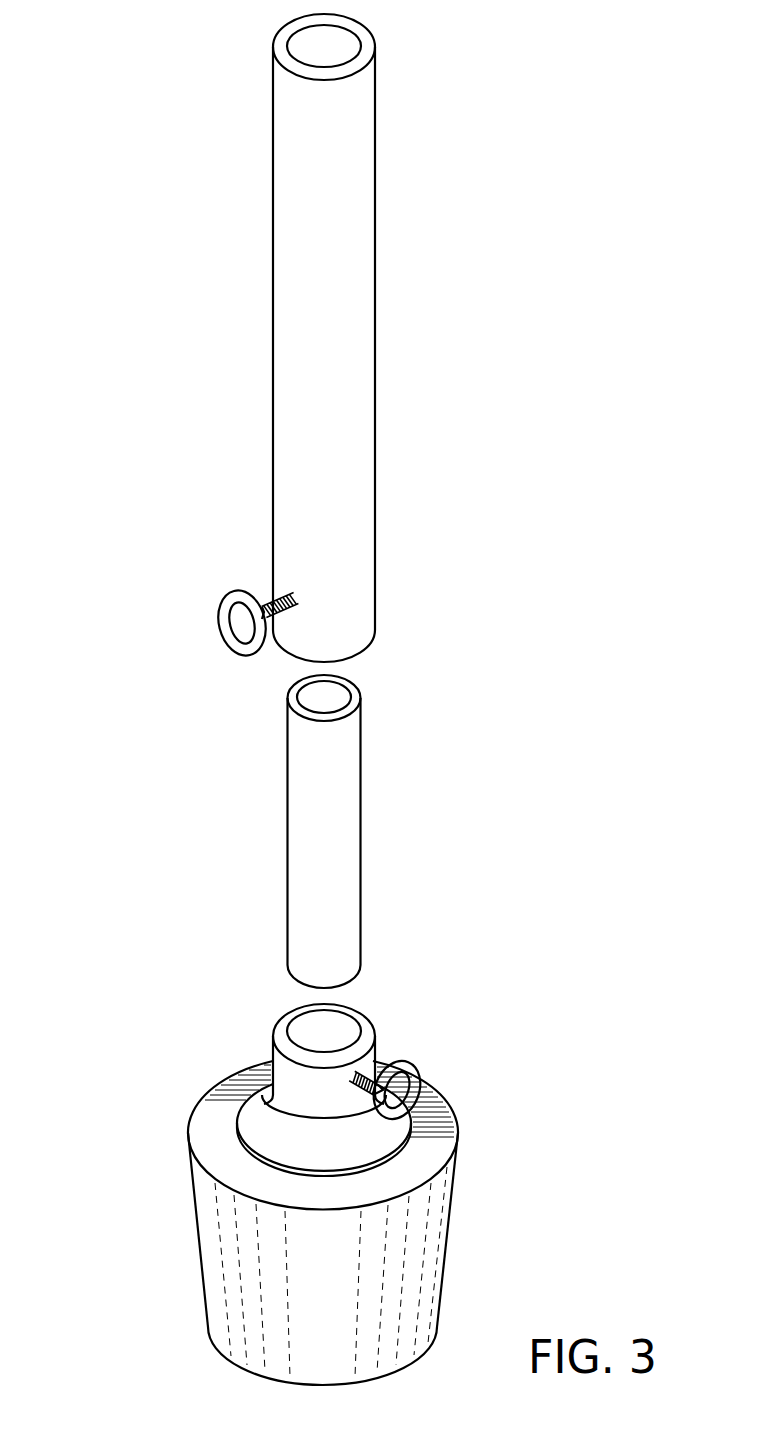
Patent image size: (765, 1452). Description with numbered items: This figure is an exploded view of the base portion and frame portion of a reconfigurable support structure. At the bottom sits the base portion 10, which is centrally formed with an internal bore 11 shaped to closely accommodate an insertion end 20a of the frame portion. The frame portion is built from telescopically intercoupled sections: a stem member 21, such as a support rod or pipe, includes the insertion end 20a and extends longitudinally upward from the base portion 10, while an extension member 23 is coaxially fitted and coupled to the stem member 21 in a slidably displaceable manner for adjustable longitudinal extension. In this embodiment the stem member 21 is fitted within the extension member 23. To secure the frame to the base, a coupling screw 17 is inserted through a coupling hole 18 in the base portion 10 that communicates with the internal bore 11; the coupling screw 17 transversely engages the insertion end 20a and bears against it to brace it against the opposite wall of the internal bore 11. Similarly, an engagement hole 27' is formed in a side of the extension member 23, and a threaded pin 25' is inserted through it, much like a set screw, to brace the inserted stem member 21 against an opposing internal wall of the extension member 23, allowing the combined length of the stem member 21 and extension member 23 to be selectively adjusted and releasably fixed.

The base portion 10 is at (148, 1193).
The internal bore 11 is at (347, 1026).
The coupling screw 17 is at (436, 1080).
The coupling hole 18 is at (372, 1059).
The insertion end 20a is at (296, 831).
The stem member 21 is at (361, 832).
The extension member 23 is at (288, 228).
The threaded pin 25' is at (205, 595).
The engagement hole 27' is at (257, 551).